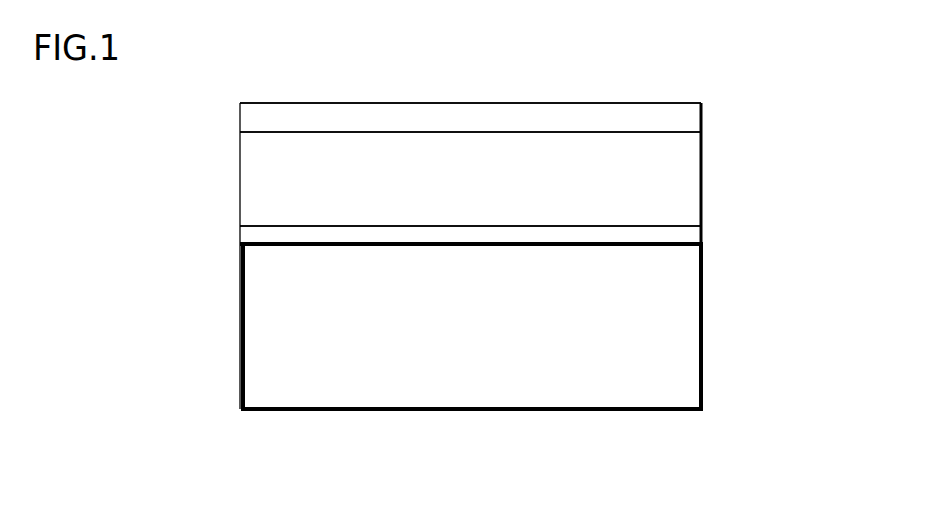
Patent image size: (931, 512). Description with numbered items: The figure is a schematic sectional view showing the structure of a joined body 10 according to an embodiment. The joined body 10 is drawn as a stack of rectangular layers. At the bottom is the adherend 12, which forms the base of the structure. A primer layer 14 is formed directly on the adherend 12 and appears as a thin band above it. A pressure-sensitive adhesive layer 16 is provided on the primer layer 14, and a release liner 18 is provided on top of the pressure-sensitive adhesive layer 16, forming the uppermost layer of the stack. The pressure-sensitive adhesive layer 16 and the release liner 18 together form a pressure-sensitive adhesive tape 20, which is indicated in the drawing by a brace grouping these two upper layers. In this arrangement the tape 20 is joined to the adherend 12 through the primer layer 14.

The joined body 10 is at (488, 483).
The adherend 12 is at (703, 331).
The primer layer 14 is at (703, 230).
The pressure-sensitive adhesive layer 16 is at (703, 165).
The release liner 18 is at (703, 116).
The pressure-sensitive adhesive tape 20 is at (797, 92).